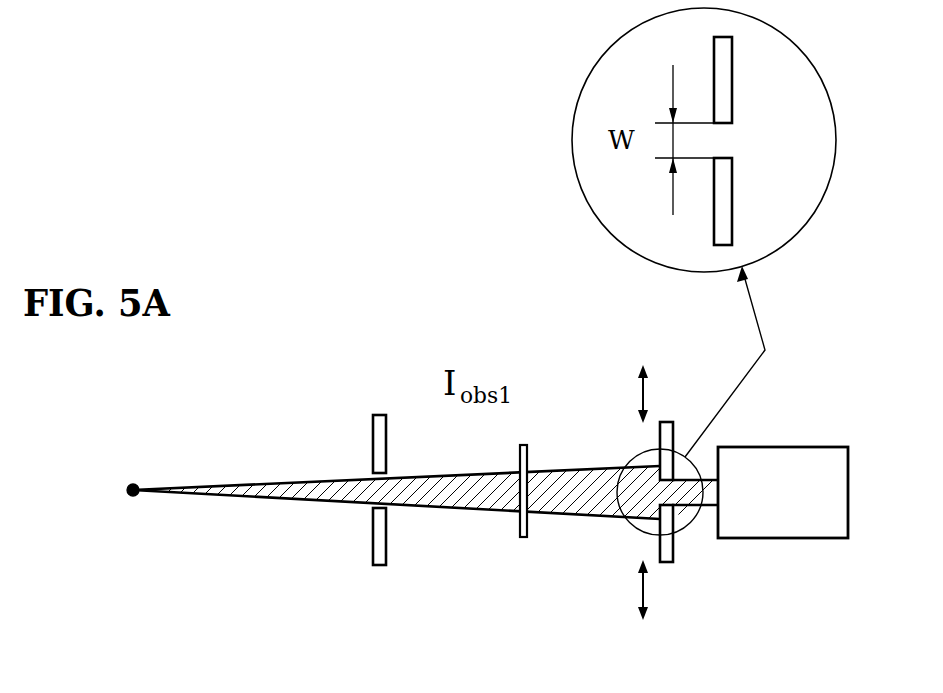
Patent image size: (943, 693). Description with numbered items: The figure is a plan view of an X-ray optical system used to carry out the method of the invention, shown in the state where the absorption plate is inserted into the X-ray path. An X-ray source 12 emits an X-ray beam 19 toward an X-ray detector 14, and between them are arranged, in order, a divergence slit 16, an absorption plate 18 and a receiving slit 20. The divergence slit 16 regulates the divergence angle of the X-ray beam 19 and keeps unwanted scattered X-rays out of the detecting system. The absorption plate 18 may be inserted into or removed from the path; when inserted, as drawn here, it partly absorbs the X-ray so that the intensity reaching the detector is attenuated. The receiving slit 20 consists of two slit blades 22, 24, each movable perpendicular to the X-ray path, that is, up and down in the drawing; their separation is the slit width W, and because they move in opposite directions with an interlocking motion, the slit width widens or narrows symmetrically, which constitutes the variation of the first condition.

The X-ray source 12 is at (134, 497).
The X-ray detector 14 is at (782, 540).
The divergence slit 16 is at (378, 567).
The absorption plate 18 is at (523, 540).
The X-ray beam 19 is at (272, 480).
The receiving slit 20 is at (684, 578).
The slit blade 22 is at (733, 93).
The slit blade 24 is at (733, 182).